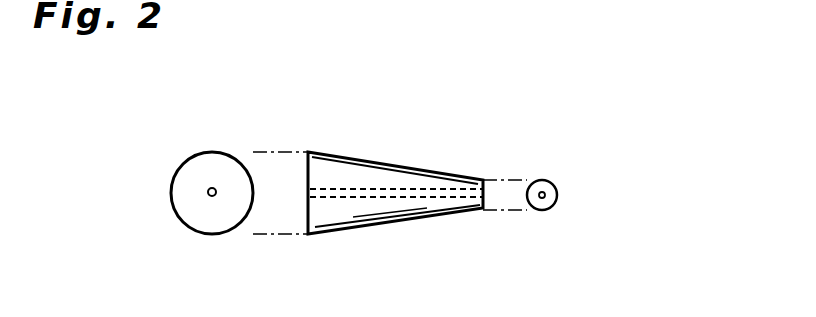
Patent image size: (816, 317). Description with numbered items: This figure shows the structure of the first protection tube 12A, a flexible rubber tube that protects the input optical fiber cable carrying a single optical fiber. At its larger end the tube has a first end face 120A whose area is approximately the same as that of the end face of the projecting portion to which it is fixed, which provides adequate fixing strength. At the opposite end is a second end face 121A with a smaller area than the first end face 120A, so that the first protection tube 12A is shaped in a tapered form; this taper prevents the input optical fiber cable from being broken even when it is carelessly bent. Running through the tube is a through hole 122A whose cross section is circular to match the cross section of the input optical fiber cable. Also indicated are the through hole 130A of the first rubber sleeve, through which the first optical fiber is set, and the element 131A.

The first end face 120A is at (195, 152).
The through hole 130A is at (212, 196).
The first protection tube 12A is at (388, 162).
The through hole 122A is at (400, 202).
The second end face 121A is at (493, 190).
The pivot shaft 131A is at (545, 198).